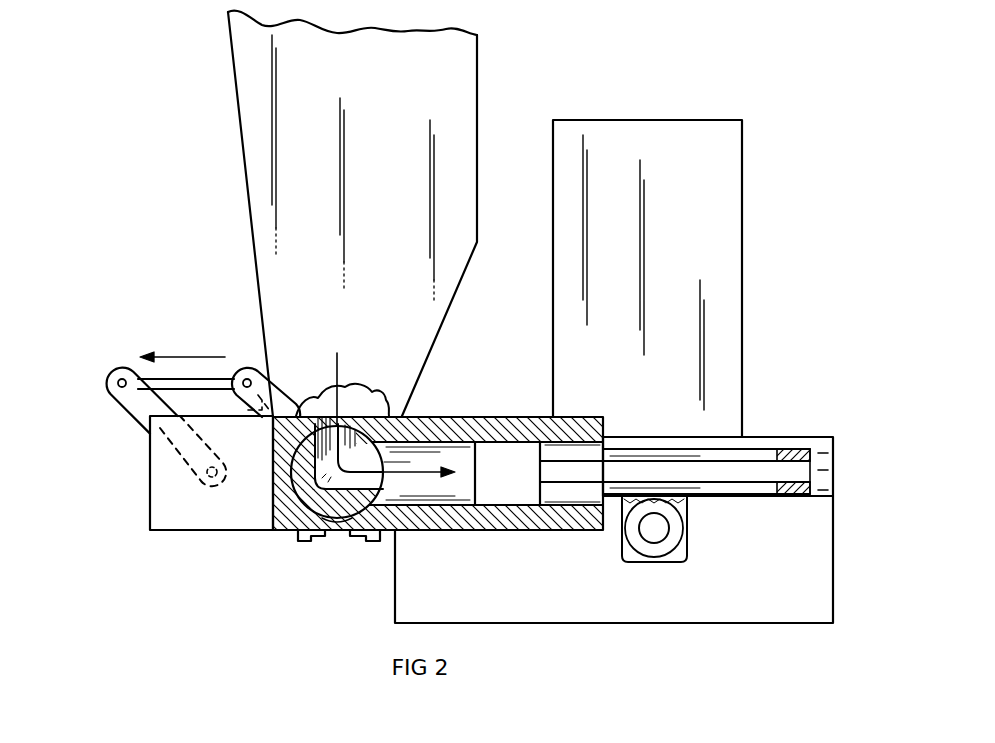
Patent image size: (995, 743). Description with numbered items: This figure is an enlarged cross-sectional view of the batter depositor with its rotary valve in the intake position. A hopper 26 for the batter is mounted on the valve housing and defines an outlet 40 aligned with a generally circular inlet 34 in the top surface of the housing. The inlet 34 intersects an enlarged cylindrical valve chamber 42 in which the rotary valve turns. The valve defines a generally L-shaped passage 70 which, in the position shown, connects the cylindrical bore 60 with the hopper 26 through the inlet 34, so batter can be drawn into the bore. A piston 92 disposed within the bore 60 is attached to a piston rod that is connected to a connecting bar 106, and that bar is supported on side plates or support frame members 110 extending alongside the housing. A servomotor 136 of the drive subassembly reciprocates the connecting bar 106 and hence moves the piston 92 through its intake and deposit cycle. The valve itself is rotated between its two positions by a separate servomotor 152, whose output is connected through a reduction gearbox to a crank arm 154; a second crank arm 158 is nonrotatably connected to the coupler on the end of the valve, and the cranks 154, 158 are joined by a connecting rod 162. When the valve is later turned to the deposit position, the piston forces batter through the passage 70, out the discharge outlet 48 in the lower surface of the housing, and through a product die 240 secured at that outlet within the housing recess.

The hopper 26 is at (258, 104).
The servomotor 136 is at (715, 167).
The inlet 34 is at (352, 414).
The L-shaped passage 70 is at (322, 414).
The outlet 40 is at (370, 400).
The cylindrical bore 60 is at (433, 455).
The piston 92 is at (515, 448).
The connecting bar 106 is at (793, 450).
The support frame member 110 is at (808, 583).
The servomotor 152 is at (165, 470).
The crank arm 154 is at (137, 405).
The second crank arm 158 is at (258, 377).
The connecting rod 162 is at (185, 378).
The product die 240 is at (297, 536).
The outlet 48 is at (354, 530).
The valve chamber 42 is at (328, 522).